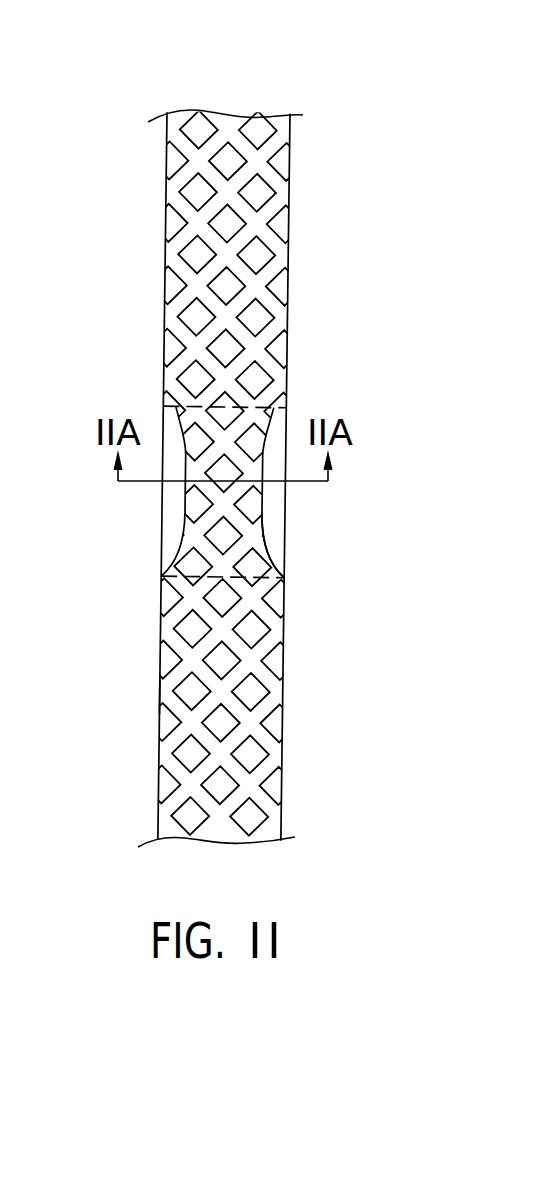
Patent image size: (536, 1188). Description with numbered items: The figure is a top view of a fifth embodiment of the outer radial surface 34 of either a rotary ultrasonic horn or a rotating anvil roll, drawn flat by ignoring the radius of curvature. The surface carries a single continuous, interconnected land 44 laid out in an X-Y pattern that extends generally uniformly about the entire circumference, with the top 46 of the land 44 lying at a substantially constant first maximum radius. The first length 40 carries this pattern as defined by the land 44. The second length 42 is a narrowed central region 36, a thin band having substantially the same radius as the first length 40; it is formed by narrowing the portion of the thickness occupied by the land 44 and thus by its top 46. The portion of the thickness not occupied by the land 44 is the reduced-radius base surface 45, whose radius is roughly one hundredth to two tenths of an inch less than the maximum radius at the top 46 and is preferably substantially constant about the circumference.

The outer radial surface 34 is at (219, 88).
The central region 36 is at (290, 552).
The first length 40 is at (128, 268).
The second length 42 is at (132, 501).
The land 44 is at (165, 364).
The base surface 45 is at (268, 505).
The top of the land 46 is at (167, 696).